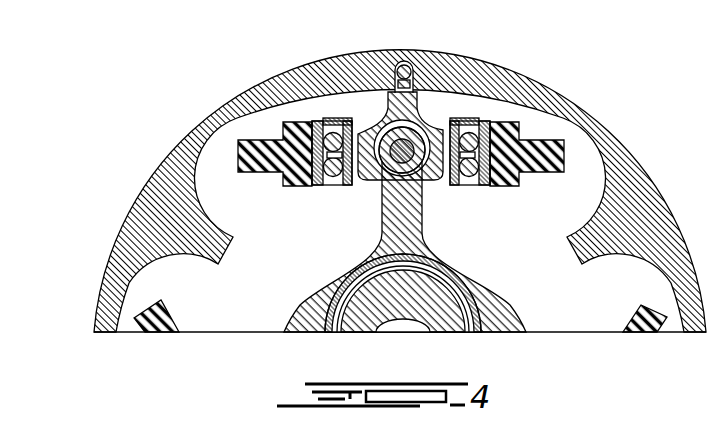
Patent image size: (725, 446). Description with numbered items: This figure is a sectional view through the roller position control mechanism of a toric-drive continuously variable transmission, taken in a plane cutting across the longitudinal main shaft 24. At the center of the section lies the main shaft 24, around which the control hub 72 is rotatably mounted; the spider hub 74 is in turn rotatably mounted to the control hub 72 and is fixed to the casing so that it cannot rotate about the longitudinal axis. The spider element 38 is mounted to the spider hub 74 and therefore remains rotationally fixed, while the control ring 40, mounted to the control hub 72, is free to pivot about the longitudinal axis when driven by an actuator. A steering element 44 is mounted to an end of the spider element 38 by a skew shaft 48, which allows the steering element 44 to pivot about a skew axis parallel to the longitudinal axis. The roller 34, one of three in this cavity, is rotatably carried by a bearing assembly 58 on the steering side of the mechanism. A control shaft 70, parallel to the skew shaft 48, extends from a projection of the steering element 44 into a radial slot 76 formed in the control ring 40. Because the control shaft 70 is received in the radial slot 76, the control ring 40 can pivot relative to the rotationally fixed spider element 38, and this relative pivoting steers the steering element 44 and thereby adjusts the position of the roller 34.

The main shaft 24 is at (412, 320).
The roller 34 is at (258, 168).
The spider element 38 is at (480, 288).
The control ring 40 is at (520, 84).
The steering element 44 is at (372, 130).
The skew shaft 48 is at (420, 192).
The bearing assembly 58 is at (333, 178).
The control shaft 70 is at (403, 58).
The control hub 72 is at (337, 333).
The spider hub 74 is at (494, 322).
The radial slot 76 is at (418, 84).